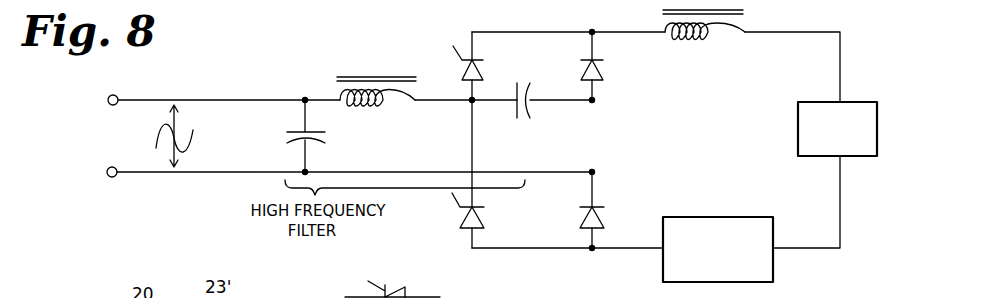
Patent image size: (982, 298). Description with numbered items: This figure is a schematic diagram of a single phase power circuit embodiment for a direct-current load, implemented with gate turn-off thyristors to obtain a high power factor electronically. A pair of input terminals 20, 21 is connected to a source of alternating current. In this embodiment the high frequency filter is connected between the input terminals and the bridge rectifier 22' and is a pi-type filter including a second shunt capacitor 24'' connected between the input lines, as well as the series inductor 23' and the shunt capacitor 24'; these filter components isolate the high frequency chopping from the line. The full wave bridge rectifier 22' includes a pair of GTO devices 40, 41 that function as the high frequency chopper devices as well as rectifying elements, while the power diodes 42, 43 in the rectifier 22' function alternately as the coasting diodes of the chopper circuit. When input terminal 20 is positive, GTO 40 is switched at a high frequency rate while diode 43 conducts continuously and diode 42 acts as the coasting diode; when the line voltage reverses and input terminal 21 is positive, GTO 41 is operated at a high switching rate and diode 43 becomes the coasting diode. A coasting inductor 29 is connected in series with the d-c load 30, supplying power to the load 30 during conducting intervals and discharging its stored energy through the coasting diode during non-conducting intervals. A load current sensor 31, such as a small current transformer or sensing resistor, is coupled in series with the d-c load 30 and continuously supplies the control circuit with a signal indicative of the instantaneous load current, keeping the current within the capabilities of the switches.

The input terminal 20 is at (118, 95).
The input terminal 21 is at (116, 177).
The series inductor 23' is at (374, 73).
The second shunt capacitor 24'' is at (280, 136).
The gate turn-off thyristor 40 is at (455, 46).
The shunt capacitor 24' is at (539, 89).
The power diode 42 is at (604, 62).
The full wave bridge rectifier 22' is at (508, 136).
The gate turn-off thyristor 41 is at (484, 217).
The power diode 43 is at (605, 210).
The coasting inductor 29 is at (748, 26).
The d-c load 30 is at (865, 105).
The load current sensor 31 is at (737, 222).